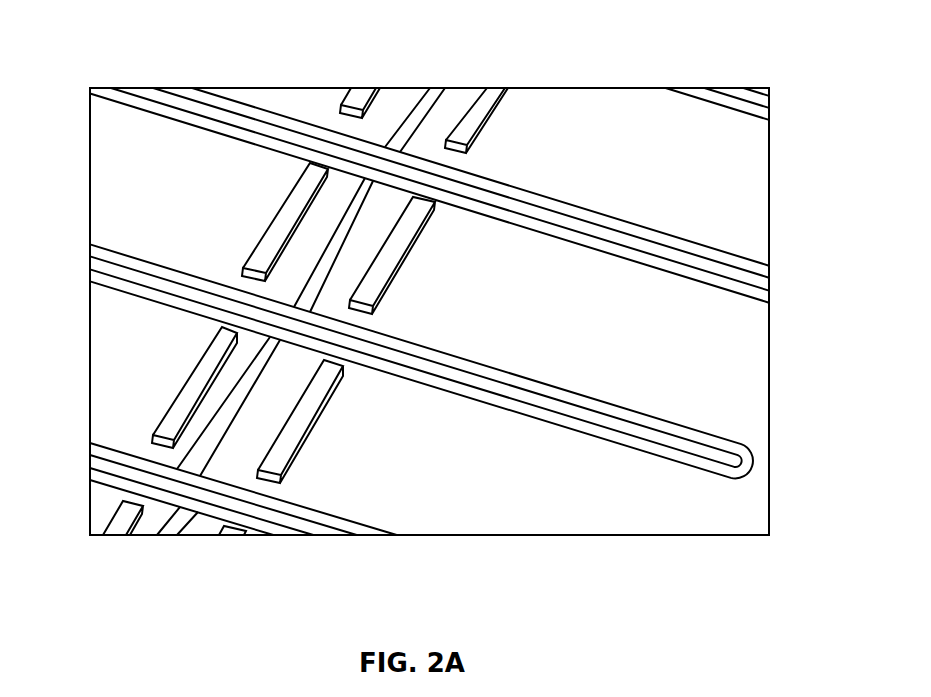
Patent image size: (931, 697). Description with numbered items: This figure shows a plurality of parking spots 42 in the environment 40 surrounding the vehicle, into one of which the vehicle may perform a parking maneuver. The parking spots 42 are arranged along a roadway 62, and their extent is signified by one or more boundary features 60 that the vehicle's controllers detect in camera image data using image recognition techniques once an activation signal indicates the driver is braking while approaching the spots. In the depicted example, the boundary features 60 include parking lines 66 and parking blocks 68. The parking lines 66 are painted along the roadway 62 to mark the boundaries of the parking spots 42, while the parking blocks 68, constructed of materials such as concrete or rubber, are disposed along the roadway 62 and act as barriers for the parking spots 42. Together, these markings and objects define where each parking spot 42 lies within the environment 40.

The environment 40 is at (352, 73).
The parking spot 42 is at (181, 170).
The boundary feature 60 is at (145, 99).
The roadway 62 is at (511, 317).
The parking line 66 is at (500, 184).
The parking block 68 is at (412, 208).